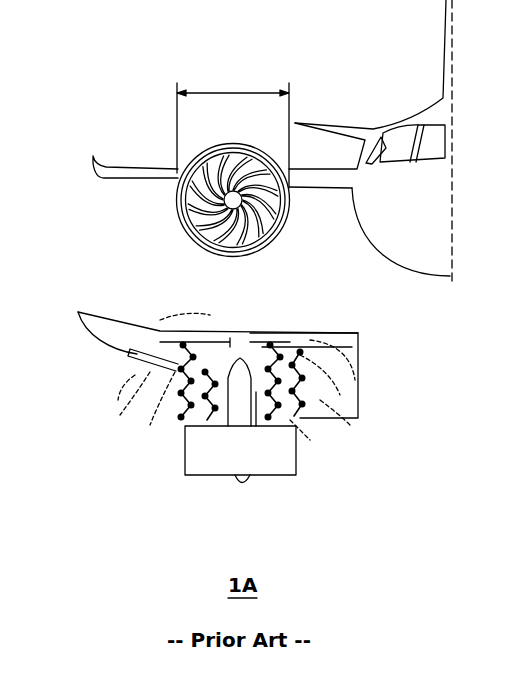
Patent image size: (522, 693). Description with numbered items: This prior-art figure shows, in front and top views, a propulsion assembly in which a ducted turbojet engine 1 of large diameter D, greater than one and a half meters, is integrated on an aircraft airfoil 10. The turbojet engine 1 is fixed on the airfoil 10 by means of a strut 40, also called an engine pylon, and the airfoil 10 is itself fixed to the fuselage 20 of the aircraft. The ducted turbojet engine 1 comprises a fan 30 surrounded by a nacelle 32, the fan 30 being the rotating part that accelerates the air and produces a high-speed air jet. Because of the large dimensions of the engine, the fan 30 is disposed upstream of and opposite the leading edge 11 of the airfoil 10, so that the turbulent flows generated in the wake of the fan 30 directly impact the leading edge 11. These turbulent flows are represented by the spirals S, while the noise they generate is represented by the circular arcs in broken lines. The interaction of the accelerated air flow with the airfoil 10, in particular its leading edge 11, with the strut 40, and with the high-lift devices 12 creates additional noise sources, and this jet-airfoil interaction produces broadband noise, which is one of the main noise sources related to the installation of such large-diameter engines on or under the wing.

The turbojet engine 1 is at (227, 324).
The airfoil 10 is at (134, 190).
The leading edge 11 is at (104, 352).
The high-lift devices 12 is at (150, 374).
The fuselage 20 is at (394, 100).
The fan 30 is at (260, 238).
The nacelle 32 is at (195, 147).
The strut 40 is at (262, 342).
The diameter D is at (233, 127).
The spirals S is at (357, 347).